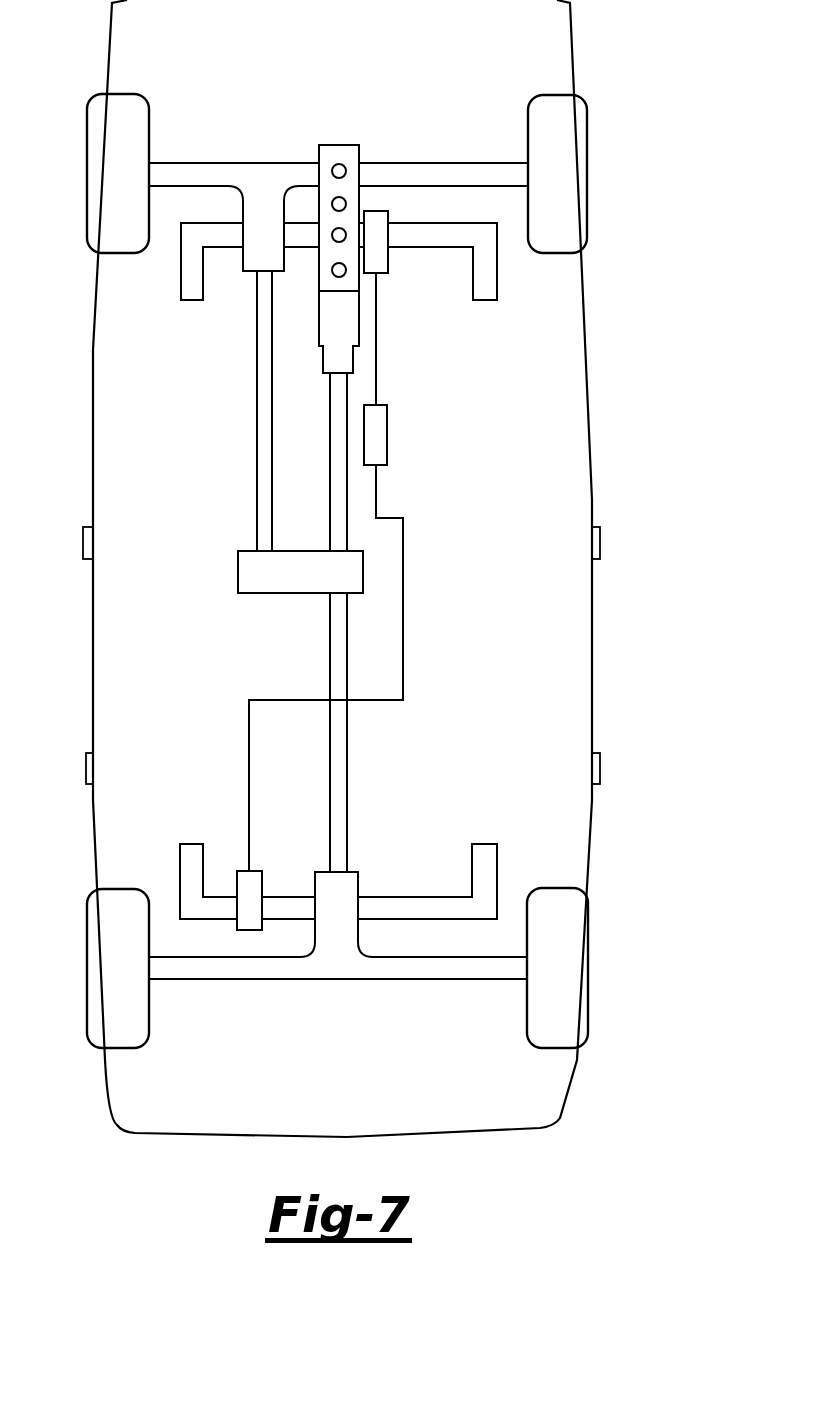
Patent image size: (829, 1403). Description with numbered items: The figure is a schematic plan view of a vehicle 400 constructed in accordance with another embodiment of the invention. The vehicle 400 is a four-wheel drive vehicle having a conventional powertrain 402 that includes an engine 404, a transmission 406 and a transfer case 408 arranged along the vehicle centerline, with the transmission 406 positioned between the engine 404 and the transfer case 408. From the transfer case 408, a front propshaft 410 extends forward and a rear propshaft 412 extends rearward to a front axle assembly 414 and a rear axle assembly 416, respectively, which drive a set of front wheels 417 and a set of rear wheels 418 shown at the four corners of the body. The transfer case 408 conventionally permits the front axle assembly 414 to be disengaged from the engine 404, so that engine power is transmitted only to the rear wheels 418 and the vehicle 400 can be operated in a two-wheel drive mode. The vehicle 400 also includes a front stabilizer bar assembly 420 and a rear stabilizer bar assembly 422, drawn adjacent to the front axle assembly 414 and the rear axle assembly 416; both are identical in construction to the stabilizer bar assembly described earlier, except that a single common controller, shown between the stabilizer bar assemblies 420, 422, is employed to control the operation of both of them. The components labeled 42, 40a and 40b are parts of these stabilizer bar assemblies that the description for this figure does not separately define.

The vehicle 400 is at (483, 1173).
The powertrain 402 is at (456, 572).
The engine 404 is at (337, 152).
The transmission 406 is at (332, 333).
The transfer case 408 is at (252, 572).
The front propshaft 410 is at (263, 325).
The rear propshaft 412 is at (337, 782).
The front axle assembly 414 is at (251, 175).
The rear axle assembly 416 is at (337, 945).
The front wheels 417 is at (600, 124).
The rear wheels 418 is at (592, 977).
The front stabilizer bar assembly 420 is at (430, 256).
The rear stabilizer bar assembly 422 is at (405, 888).
The torque transfer coupling 42 is at (376, 222).
The axle shaft 40a is at (472, 233).
The axle shaft 40b is at (193, 271).